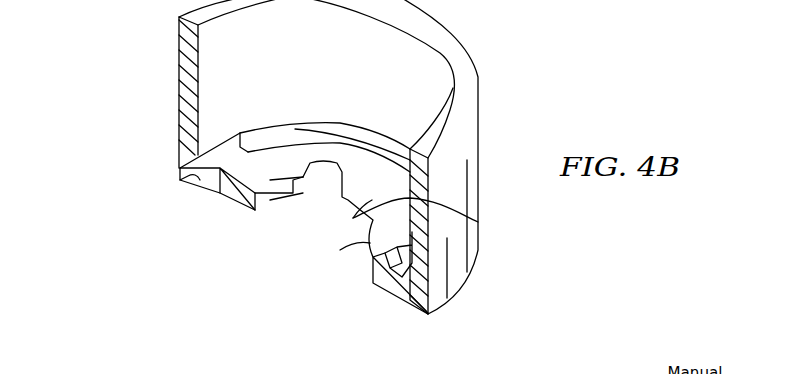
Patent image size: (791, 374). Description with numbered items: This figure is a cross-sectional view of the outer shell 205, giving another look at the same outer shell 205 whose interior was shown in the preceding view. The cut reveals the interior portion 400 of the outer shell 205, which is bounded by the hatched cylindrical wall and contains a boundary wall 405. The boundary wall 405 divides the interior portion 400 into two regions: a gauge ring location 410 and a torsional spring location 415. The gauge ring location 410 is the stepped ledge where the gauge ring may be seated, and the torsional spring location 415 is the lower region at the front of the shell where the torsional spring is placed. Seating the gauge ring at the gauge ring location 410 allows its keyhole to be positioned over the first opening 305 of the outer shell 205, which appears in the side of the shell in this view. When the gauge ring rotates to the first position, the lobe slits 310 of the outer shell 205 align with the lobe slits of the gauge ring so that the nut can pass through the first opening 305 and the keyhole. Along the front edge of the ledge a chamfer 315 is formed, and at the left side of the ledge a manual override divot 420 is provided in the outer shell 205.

The outer shell 205 is at (152, 70).
The interior portion 400 is at (427, 72).
The gauge ring location 410 is at (286, 161).
The boundary wall 405 is at (348, 132).
The manual override divot 420 is at (180, 185).
The chamfer 315 is at (288, 205).
The lobe slits 310 is at (303, 193).
The torsional spring location 415 is at (410, 248).
The first opening 305 is at (478, 222).